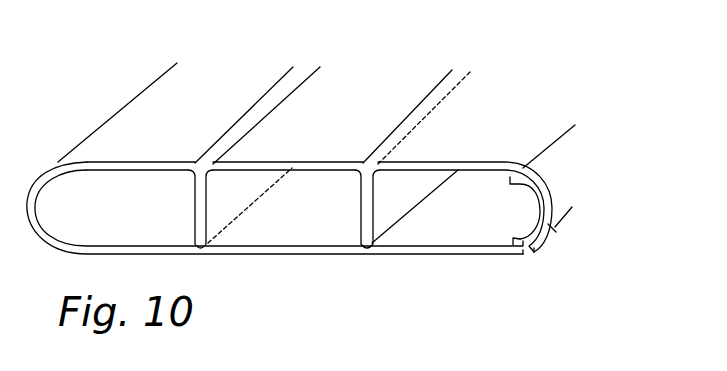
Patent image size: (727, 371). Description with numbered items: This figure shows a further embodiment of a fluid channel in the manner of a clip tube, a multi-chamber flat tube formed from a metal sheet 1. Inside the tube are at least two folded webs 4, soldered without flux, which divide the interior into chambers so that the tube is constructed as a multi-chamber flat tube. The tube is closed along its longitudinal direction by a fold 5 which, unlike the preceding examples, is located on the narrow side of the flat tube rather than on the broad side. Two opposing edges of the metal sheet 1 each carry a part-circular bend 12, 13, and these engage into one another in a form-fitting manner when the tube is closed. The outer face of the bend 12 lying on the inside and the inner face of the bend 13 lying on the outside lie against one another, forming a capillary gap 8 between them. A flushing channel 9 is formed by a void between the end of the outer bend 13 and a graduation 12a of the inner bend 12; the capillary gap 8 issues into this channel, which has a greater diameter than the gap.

The metal sheet 1 is at (118, 132).
The folded webs 4 is at (193, 222).
The fold 5 is at (579, 242).
The capillary gap 8 is at (543, 192).
The flushing channel 9 is at (533, 257).
The part-circular bend 12 is at (526, 200).
The graduation 12a is at (514, 239).
The part-circular bend 13 is at (557, 212).